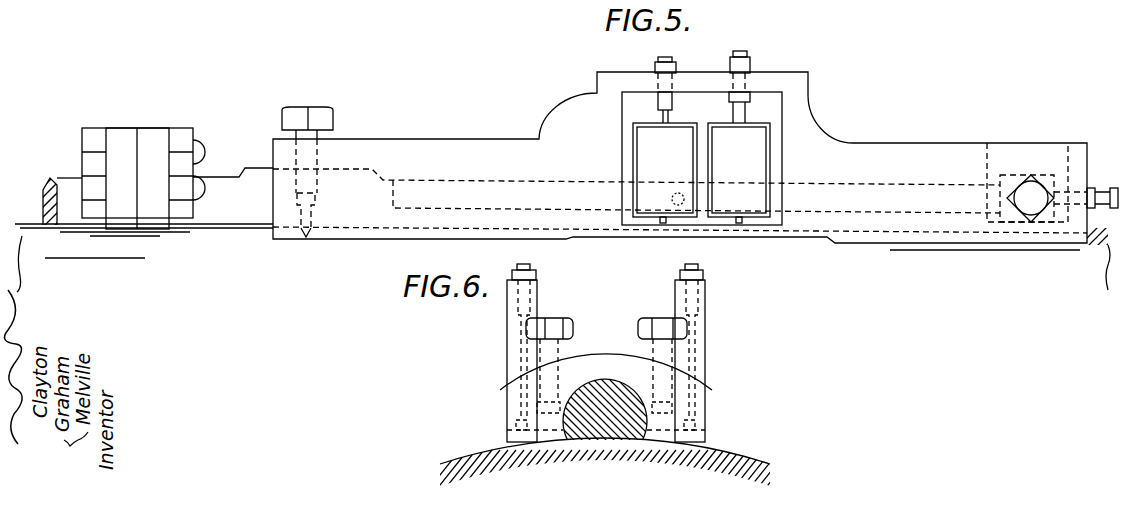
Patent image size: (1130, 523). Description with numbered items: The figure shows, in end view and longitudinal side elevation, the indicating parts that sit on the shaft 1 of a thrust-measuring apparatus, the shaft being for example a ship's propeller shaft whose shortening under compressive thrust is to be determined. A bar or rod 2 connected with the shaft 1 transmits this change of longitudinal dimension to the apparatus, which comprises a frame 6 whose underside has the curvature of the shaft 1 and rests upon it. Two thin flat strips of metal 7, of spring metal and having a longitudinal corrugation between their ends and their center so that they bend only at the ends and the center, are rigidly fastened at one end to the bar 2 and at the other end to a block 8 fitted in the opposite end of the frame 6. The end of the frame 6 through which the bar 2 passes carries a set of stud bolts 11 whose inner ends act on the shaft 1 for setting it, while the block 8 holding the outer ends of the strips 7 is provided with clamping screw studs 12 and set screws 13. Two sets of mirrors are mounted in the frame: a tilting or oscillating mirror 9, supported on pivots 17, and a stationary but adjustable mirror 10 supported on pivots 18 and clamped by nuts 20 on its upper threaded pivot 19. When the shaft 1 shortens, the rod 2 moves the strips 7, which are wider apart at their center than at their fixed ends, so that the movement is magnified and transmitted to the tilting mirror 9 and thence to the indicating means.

In FIG. 5, the shaft 1 is at (568, 257).
In FIG. 6, the shaft 1 is at (476, 458).
In FIG. 5, the bar or rod 2 is at (242, 185).
In FIG. 6, the bar or rod 2 is at (596, 410).
In FIG. 5, the frame 6 is at (386, 150).
In FIG. 6, the frame 6 is at (512, 323).
In FIG. 5, the strips of metal 7 is at (466, 181).
In FIG. 5, the block 8 is at (1043, 178).
In FIG. 5, the tilting mirror 9 is at (665, 170).
In FIG. 6, the tilting mirror 9 is at (520, 360).
In FIG. 5, the stationary mirror 10 is at (739, 170).
In FIG. 5, the stud bolts 11 is at (318, 117).
In FIG. 6, the stud bolts 11 is at (638, 327).
In FIG. 5, the clamping screw studs 12 is at (1026, 192).
In FIG. 5, the set screws 13 is at (1100, 196).
In FIG. 5, the pivots 17 is at (662, 114).
In FIG. 6, the pivots 17 is at (517, 426).
In FIG. 5, the pivots 18 is at (740, 223).
In FIG. 5, the upper threaded pivot 19 is at (748, 112).
In FIG. 5, the nuts 20 is at (738, 98).